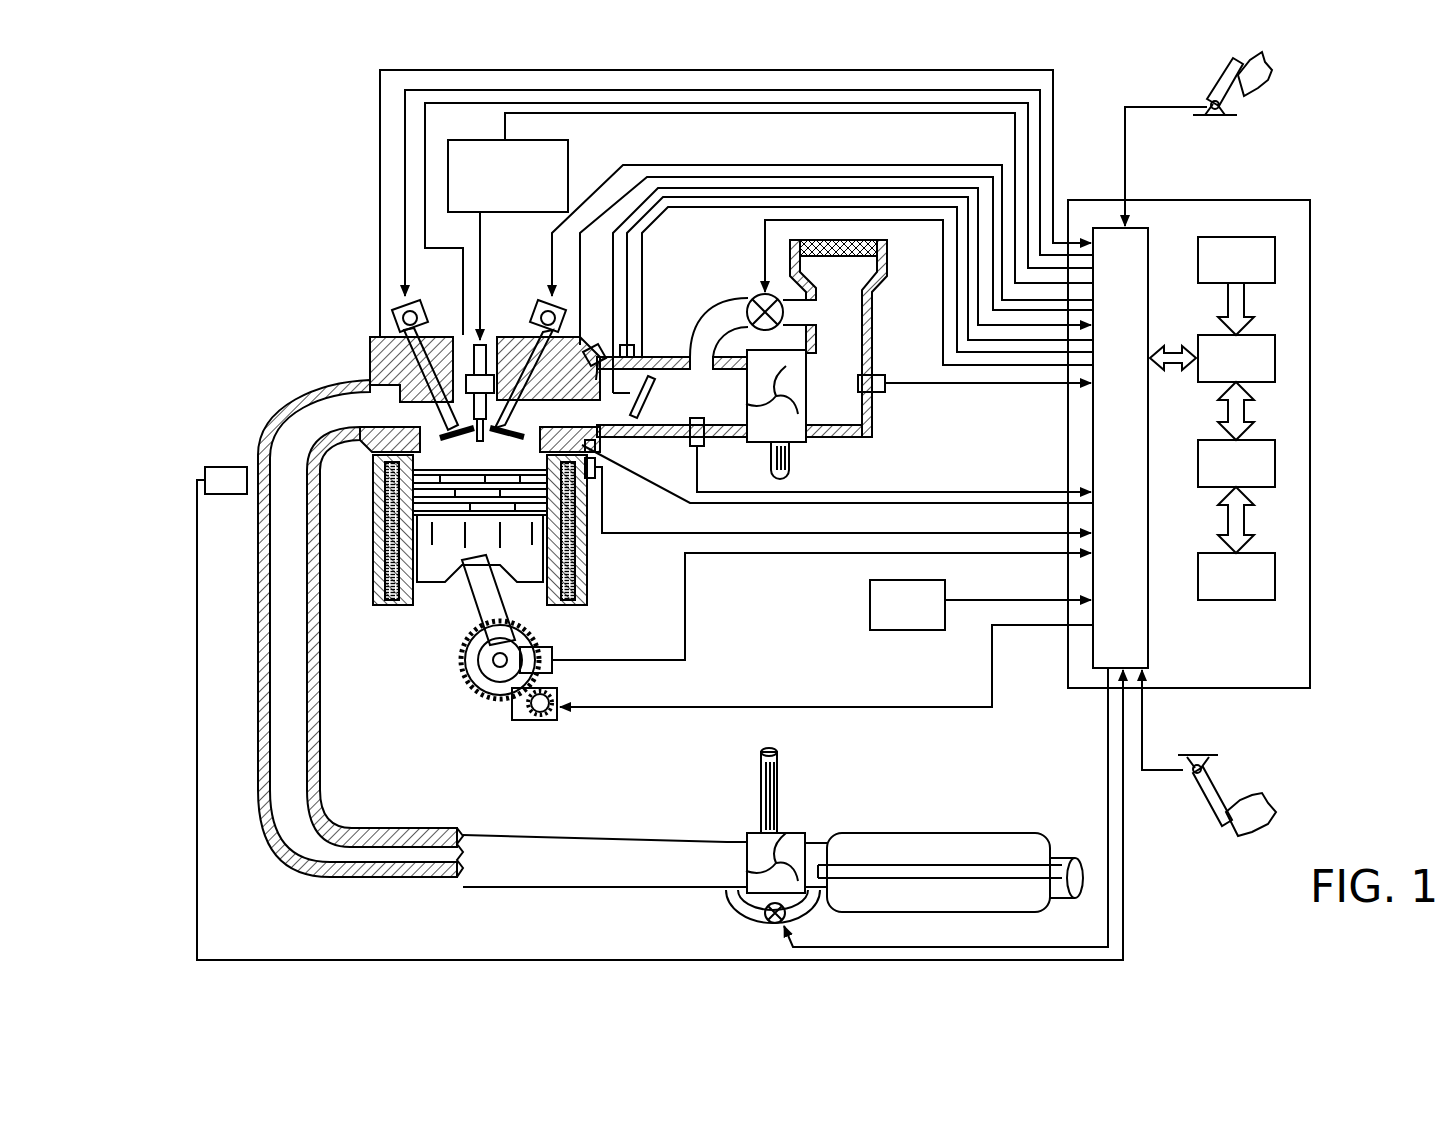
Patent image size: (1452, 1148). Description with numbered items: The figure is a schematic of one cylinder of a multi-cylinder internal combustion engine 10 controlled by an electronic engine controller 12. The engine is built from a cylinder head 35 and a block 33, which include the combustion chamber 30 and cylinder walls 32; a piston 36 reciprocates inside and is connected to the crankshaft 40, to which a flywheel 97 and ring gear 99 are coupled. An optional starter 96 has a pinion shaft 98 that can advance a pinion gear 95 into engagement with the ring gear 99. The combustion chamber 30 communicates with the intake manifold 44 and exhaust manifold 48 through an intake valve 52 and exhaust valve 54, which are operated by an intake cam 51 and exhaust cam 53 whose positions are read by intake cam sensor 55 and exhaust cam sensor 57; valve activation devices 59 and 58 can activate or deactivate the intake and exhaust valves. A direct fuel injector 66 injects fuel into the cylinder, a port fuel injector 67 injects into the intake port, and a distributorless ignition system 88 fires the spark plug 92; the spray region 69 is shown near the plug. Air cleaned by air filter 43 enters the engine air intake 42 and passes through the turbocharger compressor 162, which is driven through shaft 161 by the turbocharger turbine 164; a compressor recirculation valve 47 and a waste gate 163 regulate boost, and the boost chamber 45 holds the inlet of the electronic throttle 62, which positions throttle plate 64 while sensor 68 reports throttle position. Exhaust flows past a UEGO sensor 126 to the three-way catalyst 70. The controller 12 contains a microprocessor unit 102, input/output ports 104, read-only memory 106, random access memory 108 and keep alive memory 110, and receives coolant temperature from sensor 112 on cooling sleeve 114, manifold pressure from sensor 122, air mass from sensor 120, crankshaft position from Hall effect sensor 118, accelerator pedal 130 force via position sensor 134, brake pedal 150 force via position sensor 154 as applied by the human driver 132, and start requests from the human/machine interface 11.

The internal combustion engine 10 is at (303, 283).
The human/machine interface 11 is at (980, 605).
The electronic engine controller 12 is at (1300, 200).
The combustion chamber 30 is at (400, 510).
The cylinder walls 32 is at (417, 595).
The block 33 is at (372, 487).
The cylinder head 35 is at (368, 335).
The piston 36 is at (465, 556).
The crankshaft 40 is at (480, 690).
The engine air intake 42 is at (712, 268).
The air filter 43 is at (860, 258).
The intake manifold 44 is at (618, 413).
The boost chamber 45 is at (722, 413).
The compressor recirculation valve 47 is at (752, 295).
The exhaust manifold 48 is at (350, 420).
The intake cam 51 is at (543, 305).
The intake valve 52 is at (535, 412).
The exhaust cam 53 is at (412, 305).
The exhaust valve 54 is at (430, 422).
The intake cam sensor 55 is at (562, 328).
The exhaust cam sensor 57 is at (393, 315).
The valve activation device 58 is at (418, 318).
The valve activation device 59 is at (543, 337).
The electronic throttle 62 is at (650, 405).
The throttle plate 64 is at (690, 432).
The direct fuel injector 66 is at (600, 478).
The port fuel injector 67 is at (598, 350).
The throttle position sensor 68 is at (645, 365).
The fuel spray 69 is at (462, 440).
The three-way catalyst 70 is at (870, 833).
The distributorless ignition system 88 is at (568, 150).
The spark plug 92 is at (488, 345).
The pinion gear 95 is at (545, 720).
The starter 96 is at (553, 722).
The flywheel 97 is at (465, 675).
The pinion shaft 98 is at (525, 722).
The ring gear 99 is at (500, 705).
The microprocessor unit 102 is at (1276, 355).
The input/output ports 104 is at (1150, 233).
The read-only memory 106 is at (1276, 255).
The random access memory 108 is at (1276, 465).
The keep alive memory 110 is at (1276, 573).
The temperature sensor 112 is at (603, 505).
The cooling sleeve 114 is at (588, 548).
The Hall effect sensor 118 is at (552, 650).
The air mass sensor 120 is at (885, 383).
The pressure sensor 122 is at (692, 447).
The Universal Exhaust Gas Oxygen sensor 126 is at (205, 470).
The accelerator pedal 130 is at (1195, 90).
The human driver 132 is at (1258, 70).
The position sensor 134 is at (1237, 110).
The brake pedal 150 is at (1215, 825).
The position sensor 154 is at (1190, 770).
The shaft 161 is at (768, 462).
The turbocharger compressor 162 is at (788, 452).
The waste gate 163 is at (768, 925).
The turbocharger turbine 164 is at (749, 838).